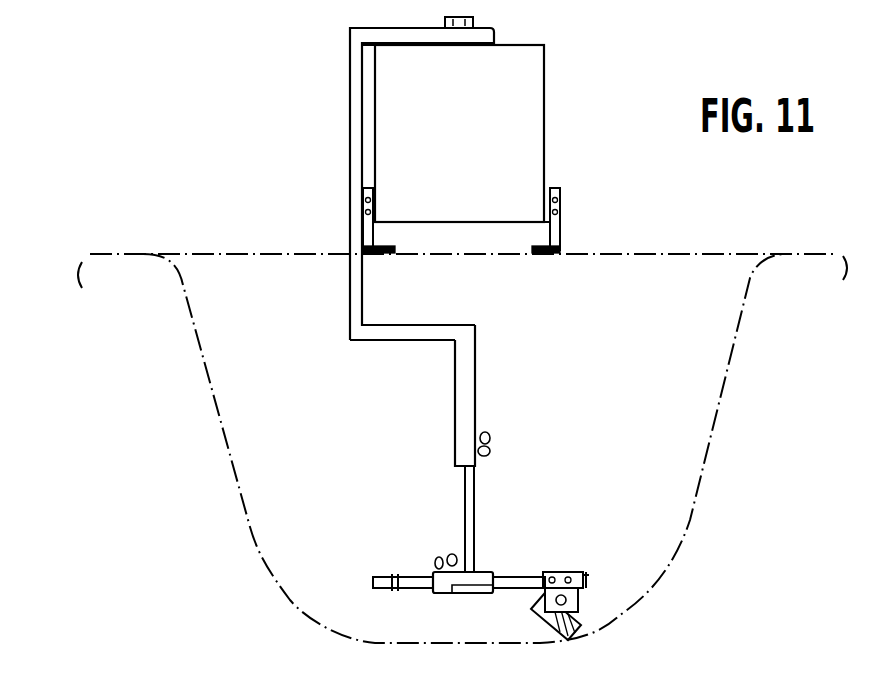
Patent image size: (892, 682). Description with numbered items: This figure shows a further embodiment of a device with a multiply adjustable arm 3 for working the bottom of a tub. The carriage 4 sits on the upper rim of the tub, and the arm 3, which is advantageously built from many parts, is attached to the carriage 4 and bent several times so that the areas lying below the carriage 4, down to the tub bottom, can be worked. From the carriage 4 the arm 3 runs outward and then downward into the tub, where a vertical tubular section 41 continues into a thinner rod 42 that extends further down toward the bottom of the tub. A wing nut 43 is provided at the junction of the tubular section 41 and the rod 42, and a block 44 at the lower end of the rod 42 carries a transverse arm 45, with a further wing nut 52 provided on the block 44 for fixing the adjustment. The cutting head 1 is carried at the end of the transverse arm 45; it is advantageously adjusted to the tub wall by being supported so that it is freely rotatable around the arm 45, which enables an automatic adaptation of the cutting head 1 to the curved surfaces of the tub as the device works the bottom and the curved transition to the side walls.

The cutting head 1 is at (584, 602).
The arm 3 is at (352, 280).
The carriage 4 is at (534, 134).
The vertical tube 41 is at (470, 400).
The rod 42 is at (470, 516).
The wing nut 43 is at (491, 449).
The clamping block 44 is at (452, 595).
The arm 45 is at (518, 576).
The wing nut 52 is at (442, 557).